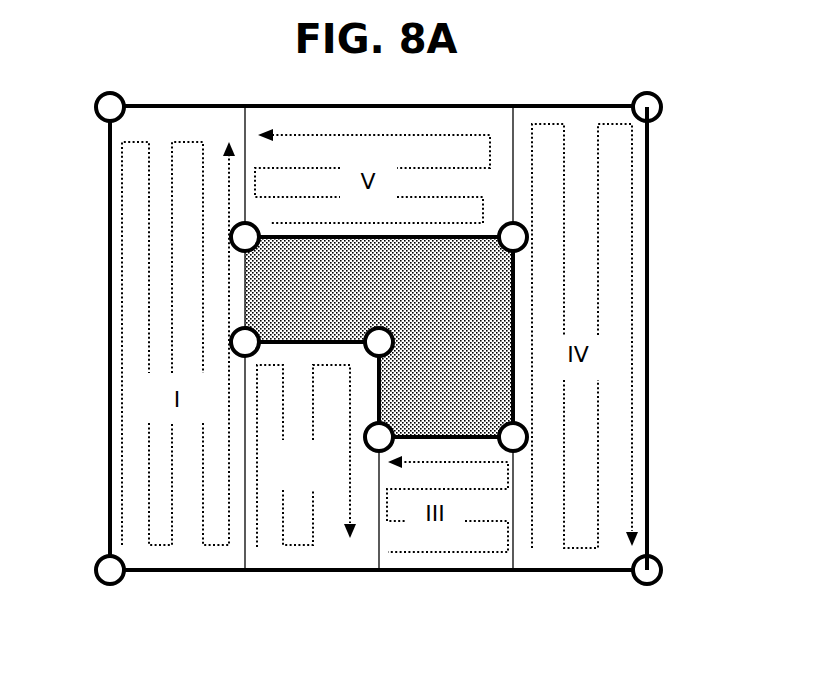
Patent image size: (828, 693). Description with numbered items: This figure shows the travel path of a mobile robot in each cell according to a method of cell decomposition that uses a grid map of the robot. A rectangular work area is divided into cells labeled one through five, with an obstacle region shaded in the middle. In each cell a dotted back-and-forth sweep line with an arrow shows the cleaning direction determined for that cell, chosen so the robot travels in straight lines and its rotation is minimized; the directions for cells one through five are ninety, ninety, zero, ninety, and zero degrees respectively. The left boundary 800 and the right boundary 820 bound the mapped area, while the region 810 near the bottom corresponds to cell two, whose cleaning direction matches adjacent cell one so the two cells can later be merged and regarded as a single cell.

The imaging region / frame 800 is at (122, 245).
The scan region II 810 is at (292, 545).
The right boundary 820 is at (643, 218).